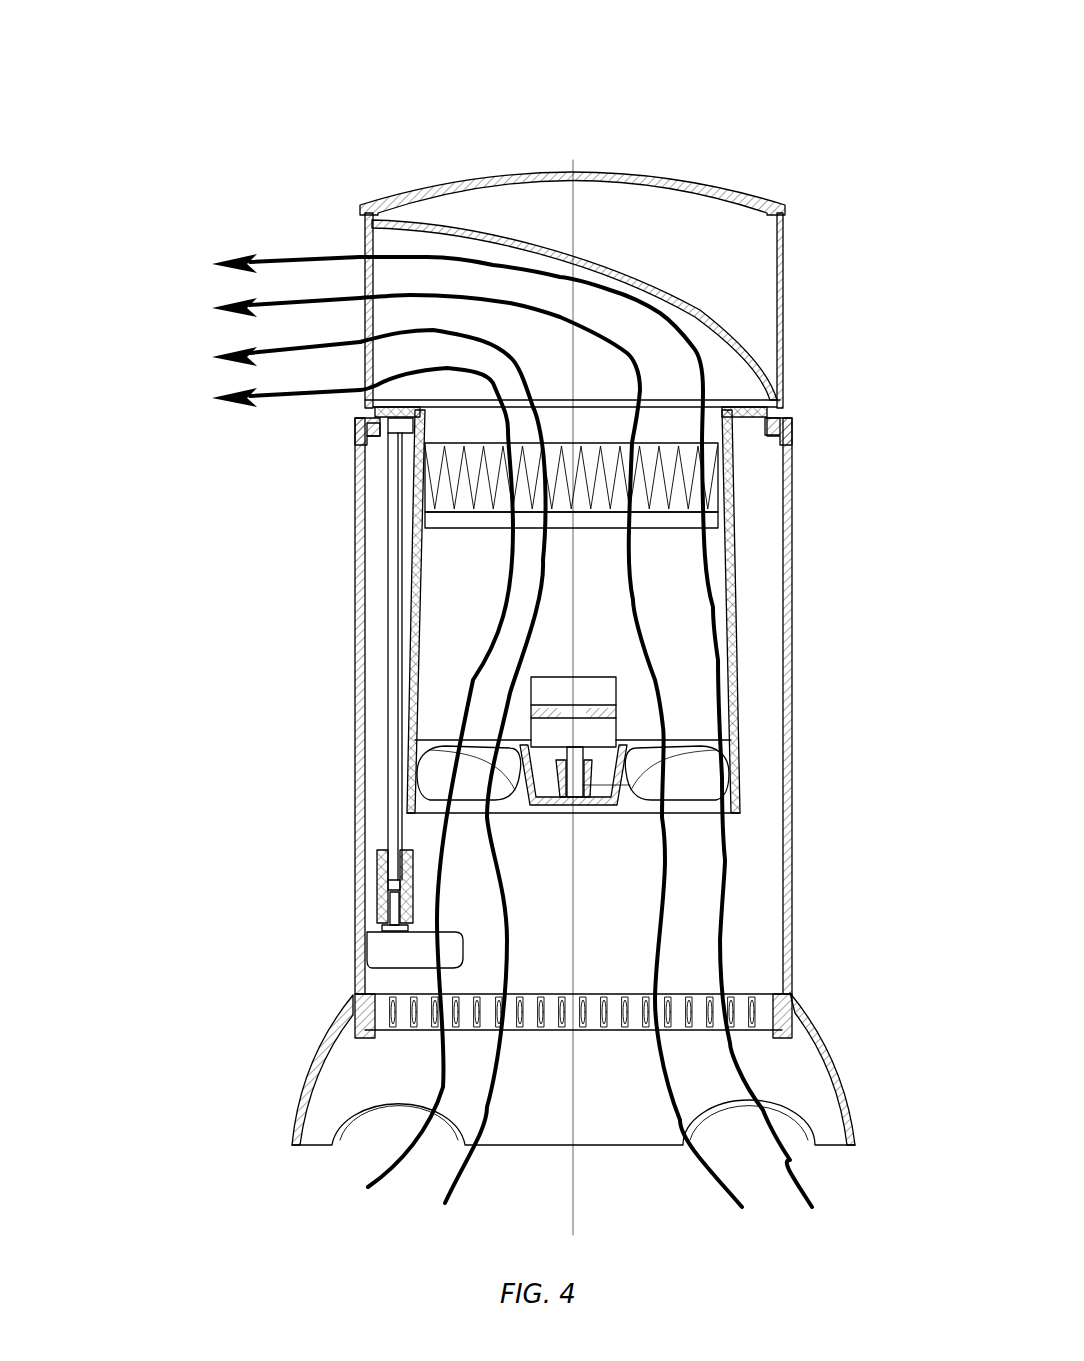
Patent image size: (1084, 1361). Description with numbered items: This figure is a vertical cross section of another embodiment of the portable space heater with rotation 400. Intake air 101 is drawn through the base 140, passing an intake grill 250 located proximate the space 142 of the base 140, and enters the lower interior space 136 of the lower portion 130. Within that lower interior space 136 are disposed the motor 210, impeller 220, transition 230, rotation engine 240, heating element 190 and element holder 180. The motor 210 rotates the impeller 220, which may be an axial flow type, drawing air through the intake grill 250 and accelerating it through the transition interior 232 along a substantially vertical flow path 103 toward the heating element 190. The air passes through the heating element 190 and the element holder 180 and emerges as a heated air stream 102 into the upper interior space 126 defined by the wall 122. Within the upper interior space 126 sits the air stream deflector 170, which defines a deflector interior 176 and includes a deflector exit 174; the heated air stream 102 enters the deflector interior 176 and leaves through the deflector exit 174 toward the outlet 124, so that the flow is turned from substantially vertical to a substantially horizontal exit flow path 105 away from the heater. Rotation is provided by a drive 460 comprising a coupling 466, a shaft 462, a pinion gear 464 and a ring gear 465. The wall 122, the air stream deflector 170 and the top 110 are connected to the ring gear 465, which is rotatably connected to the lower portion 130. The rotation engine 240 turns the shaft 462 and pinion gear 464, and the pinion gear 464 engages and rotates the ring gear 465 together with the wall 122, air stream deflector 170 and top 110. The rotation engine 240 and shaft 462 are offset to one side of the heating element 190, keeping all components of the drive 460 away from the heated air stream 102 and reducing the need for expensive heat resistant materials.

The portable space heater with 360° rotation 400 is at (225, 75).
The top 110 is at (700, 180).
The outlet 124 is at (367, 317).
The wall 122 is at (780, 357).
The air stream deflector 170 is at (748, 323).
The upper interior space 126 is at (748, 290).
The deflector exit 174 is at (367, 273).
The exit flow path 105 is at (453, 293).
The deflector interior 176 is at (503, 285).
The lower portion 130 is at (792, 612).
The lower interior space 136 is at (768, 905).
The drive 460 is at (259, 674).
The pinion gear 464 is at (385, 435).
The ring gear 465 is at (370, 425).
The shaft 462 is at (390, 488).
The coupling 466 is at (295, 864).
The substantially vertical flow path 103 is at (640, 597).
The transition interior 232 is at (687, 645).
The transition 230 is at (737, 683).
The element holder 180 is at (745, 413).
The heating element 190 is at (667, 518).
The motor 210 is at (616, 688).
The impeller 220 is at (743, 808).
The rotation engine 240 is at (387, 952).
The intake grill 250 is at (745, 1030).
The base 140 is at (325, 1050).
The space 142 is at (360, 1072).
The intake air 101 is at (360, 1167).
The heated air stream 102 is at (212, 248).